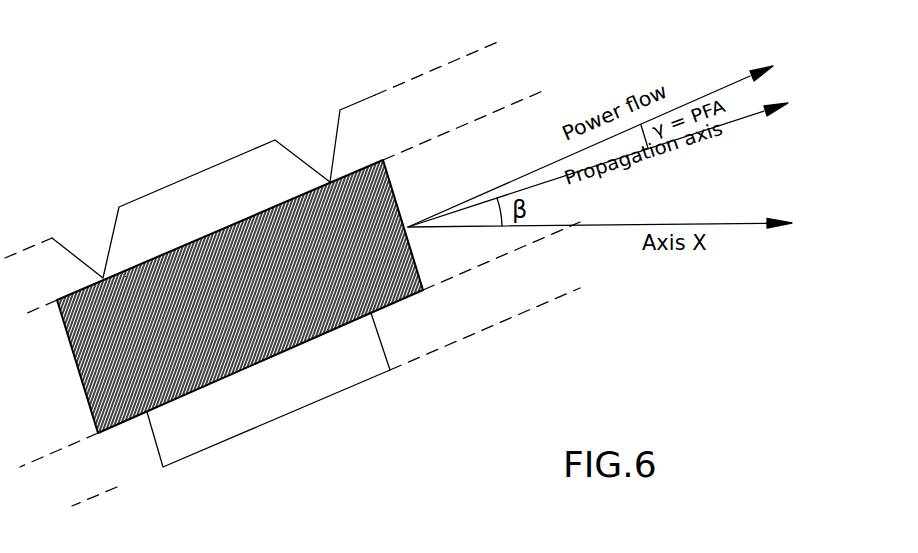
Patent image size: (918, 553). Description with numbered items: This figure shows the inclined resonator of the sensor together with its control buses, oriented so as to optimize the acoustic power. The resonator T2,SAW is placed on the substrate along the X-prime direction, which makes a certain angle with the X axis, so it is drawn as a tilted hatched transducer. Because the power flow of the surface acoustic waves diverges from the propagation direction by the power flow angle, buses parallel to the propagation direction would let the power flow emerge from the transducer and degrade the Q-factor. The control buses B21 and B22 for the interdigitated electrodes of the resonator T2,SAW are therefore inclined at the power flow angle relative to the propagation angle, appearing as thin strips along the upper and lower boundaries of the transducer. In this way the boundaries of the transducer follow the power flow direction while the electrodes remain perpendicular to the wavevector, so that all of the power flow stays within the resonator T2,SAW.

The resonator T2,SAW is at (155, 153).
The control bus B21 is at (263, 175).
The control bus B22 is at (297, 388).